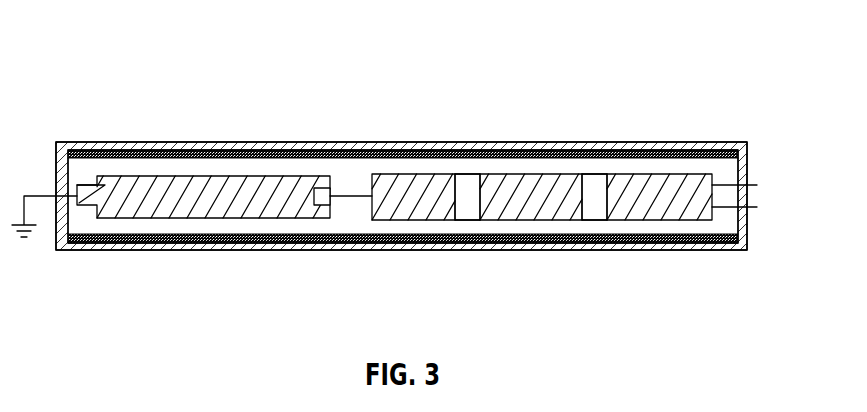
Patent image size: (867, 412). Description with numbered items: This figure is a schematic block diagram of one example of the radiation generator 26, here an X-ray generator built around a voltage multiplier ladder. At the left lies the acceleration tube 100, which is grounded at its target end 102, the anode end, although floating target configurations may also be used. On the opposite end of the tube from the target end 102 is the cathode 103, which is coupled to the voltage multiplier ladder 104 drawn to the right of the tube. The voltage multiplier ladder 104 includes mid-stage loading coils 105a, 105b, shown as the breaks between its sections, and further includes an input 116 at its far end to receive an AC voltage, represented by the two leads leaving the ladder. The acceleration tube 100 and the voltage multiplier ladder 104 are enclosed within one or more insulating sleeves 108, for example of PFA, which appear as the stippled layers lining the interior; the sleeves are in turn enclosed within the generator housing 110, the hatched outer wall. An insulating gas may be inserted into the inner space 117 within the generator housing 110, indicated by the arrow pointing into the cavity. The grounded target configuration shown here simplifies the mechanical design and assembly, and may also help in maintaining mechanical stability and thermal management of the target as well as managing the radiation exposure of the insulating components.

The radiation generator 26 is at (678, 44).
The acceleration tube 100 is at (235, 212).
The target end 102 is at (82, 204).
The cathode 103 is at (319, 206).
The voltage multiplier ladder 104 is at (515, 217).
The mid-stage loading coil 105a is at (597, 172).
The mid-stage loading coil 105b is at (460, 172).
The insulating sleeve 108 is at (427, 240).
The generator housing 110 is at (185, 151).
The input 116 is at (715, 179).
The inner space 117 is at (373, 164).